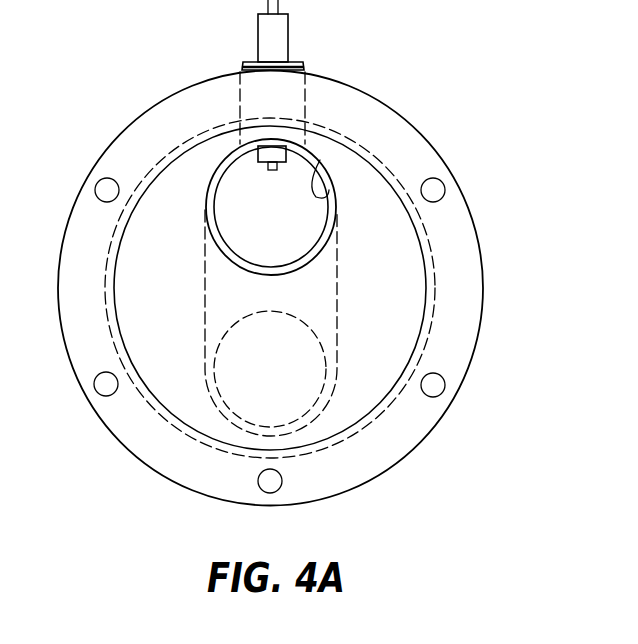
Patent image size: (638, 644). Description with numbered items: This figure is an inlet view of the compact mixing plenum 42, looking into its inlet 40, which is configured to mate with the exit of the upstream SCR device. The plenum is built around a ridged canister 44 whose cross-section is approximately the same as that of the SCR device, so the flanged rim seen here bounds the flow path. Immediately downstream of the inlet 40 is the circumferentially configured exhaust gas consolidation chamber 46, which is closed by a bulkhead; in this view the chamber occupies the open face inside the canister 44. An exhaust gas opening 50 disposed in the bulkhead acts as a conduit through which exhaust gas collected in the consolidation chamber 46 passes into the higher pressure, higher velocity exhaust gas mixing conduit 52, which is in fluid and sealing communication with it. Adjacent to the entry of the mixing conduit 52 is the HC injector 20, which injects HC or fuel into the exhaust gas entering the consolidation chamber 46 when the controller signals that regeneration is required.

The HC injector 20 is at (251, 156).
The inlet 40 is at (385, 135).
The compact mixing plenum 42 is at (134, 109).
The ridged canister 44 is at (431, 319).
The exhaust gas consolidation chamber 46 is at (179, 292).
The exhaust gas opening 50 is at (284, 216).
The exhaust gas mixing conduit 52 is at (320, 160).